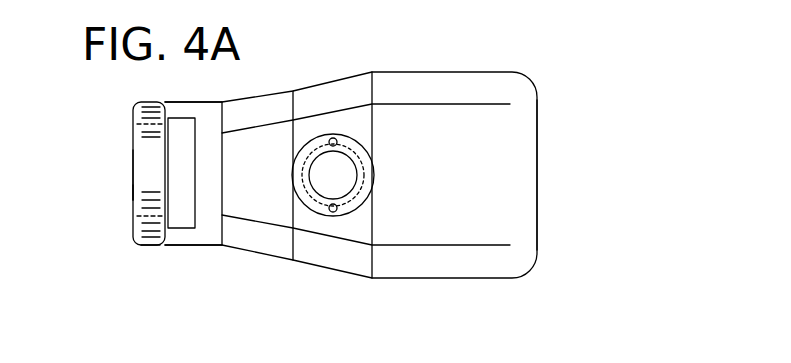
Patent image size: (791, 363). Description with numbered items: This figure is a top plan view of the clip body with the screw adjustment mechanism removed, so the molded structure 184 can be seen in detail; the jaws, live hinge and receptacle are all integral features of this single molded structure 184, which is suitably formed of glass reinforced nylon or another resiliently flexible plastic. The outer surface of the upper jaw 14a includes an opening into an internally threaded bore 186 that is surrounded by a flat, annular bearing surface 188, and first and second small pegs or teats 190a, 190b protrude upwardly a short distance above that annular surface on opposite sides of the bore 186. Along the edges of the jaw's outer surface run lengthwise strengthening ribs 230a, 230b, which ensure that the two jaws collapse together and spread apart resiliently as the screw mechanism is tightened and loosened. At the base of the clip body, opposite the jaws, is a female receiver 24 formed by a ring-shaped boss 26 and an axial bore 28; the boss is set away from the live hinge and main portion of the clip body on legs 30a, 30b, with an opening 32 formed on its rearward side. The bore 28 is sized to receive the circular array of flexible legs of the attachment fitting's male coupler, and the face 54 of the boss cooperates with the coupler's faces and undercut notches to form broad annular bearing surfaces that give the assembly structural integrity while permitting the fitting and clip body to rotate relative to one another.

The molded structure 184 is at (532, 73).
The upper jaw 14a is at (538, 208).
The lengthwise strengthening rib 230b is at (430, 87).
The lengthwise strengthening rib 230a is at (432, 262).
The internally threaded bore 186 is at (325, 198).
The annular bearing surface 188 is at (368, 183).
The second peg 190b is at (338, 140).
The first peg 190a is at (339, 211).
The axial bore 28 is at (143, 133).
The female receiver 24 is at (131, 176).
The bearing face 54 is at (133, 193).
The ring-shaped boss 26 is at (137, 247).
The opening 32 is at (177, 207).
The leg 30a is at (185, 247).
The leg 30b is at (193, 100).